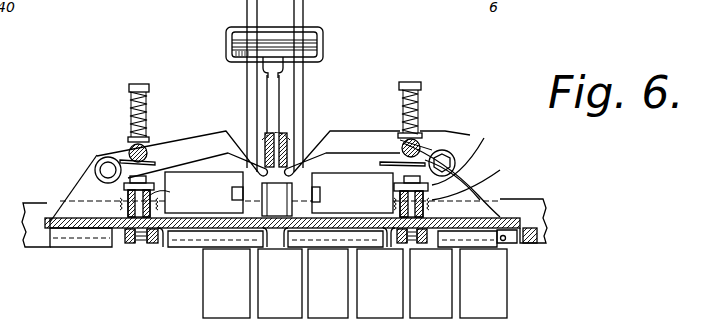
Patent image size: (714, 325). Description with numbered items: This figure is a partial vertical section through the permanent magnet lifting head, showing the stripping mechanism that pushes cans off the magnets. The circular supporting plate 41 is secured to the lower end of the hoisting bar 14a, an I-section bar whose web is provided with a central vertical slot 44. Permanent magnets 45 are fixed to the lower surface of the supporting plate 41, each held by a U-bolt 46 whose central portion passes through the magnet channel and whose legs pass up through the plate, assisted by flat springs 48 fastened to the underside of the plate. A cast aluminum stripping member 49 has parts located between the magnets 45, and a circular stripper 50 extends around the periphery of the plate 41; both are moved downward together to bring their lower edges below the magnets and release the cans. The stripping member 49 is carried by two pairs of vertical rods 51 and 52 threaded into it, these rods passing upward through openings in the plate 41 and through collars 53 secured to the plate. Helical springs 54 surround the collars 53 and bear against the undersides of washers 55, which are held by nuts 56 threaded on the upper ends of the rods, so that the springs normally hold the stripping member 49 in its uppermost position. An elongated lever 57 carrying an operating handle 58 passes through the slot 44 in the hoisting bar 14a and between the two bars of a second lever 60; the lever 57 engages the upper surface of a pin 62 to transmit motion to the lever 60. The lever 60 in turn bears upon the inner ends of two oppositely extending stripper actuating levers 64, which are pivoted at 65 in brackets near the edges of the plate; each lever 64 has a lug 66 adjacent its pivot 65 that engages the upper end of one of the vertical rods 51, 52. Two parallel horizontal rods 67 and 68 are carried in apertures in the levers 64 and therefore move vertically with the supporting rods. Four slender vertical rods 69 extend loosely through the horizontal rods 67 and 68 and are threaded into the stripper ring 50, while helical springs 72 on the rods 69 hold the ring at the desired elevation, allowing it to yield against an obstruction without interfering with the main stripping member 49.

The hoisting bar 14a is at (303, 15).
The circular supporting plate 41 is at (75, 228).
The central vertical opening or slot 44 is at (283, 110).
The permanent magnets 45 is at (365, 250).
The U-bolt 46 is at (164, 243).
The flat springs 48 is at (230, 231).
The stripping member 49 is at (132, 230).
The circular stripper 50 is at (545, 213).
The vertical rods 51 is at (492, 172).
The vertical rods 52 is at (107, 229).
The collars 53 is at (120, 208).
The helical springs 54 is at (158, 197).
The washers 55 is at (155, 183).
The nuts 56 is at (397, 178).
The elongated lever 57 is at (272, 80).
The operating handle 58 is at (228, 30).
The second lever 60 is at (284, 160).
The pin 62 is at (264, 140).
The stripper actuating levers 64 is at (192, 136).
The pivot 65 is at (96, 165).
The lug 66 is at (157, 163).
The horizontal rod 67 is at (130, 152).
The horizontal rod 68 is at (428, 128).
The slender vertical rods 69 is at (140, 84).
The helical springs 72 is at (149, 112).